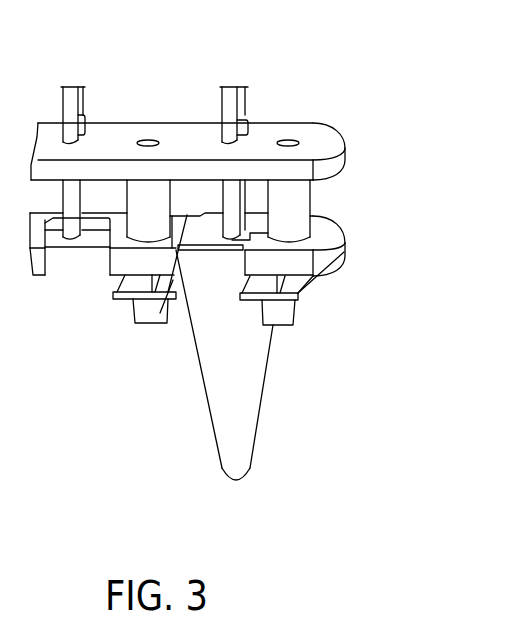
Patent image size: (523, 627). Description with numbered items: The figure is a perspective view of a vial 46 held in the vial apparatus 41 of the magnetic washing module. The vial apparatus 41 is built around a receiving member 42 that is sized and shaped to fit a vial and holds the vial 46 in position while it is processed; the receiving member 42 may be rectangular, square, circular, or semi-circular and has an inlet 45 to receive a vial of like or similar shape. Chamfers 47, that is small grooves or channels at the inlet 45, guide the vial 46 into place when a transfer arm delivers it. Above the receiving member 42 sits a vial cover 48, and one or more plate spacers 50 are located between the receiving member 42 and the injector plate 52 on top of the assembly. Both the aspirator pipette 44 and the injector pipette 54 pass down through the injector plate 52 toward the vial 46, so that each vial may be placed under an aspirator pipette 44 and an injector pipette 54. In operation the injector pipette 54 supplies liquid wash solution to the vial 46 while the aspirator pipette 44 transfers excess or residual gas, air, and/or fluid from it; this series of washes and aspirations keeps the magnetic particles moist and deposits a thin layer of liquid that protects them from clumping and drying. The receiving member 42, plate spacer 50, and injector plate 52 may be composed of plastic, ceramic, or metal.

The vial apparatus 41 is at (392, 40).
The receiving member 42 is at (320, 277).
The aspirator pipette 44 is at (223, 198).
The inlet 45 is at (183, 318).
The vial 46 is at (237, 406).
The chamfers 47 is at (162, 320).
The vial cover 48 is at (340, 243).
The plate spacer 50 is at (300, 196).
The injector plate 52 is at (343, 148).
The injector pipette 54 is at (240, 198).